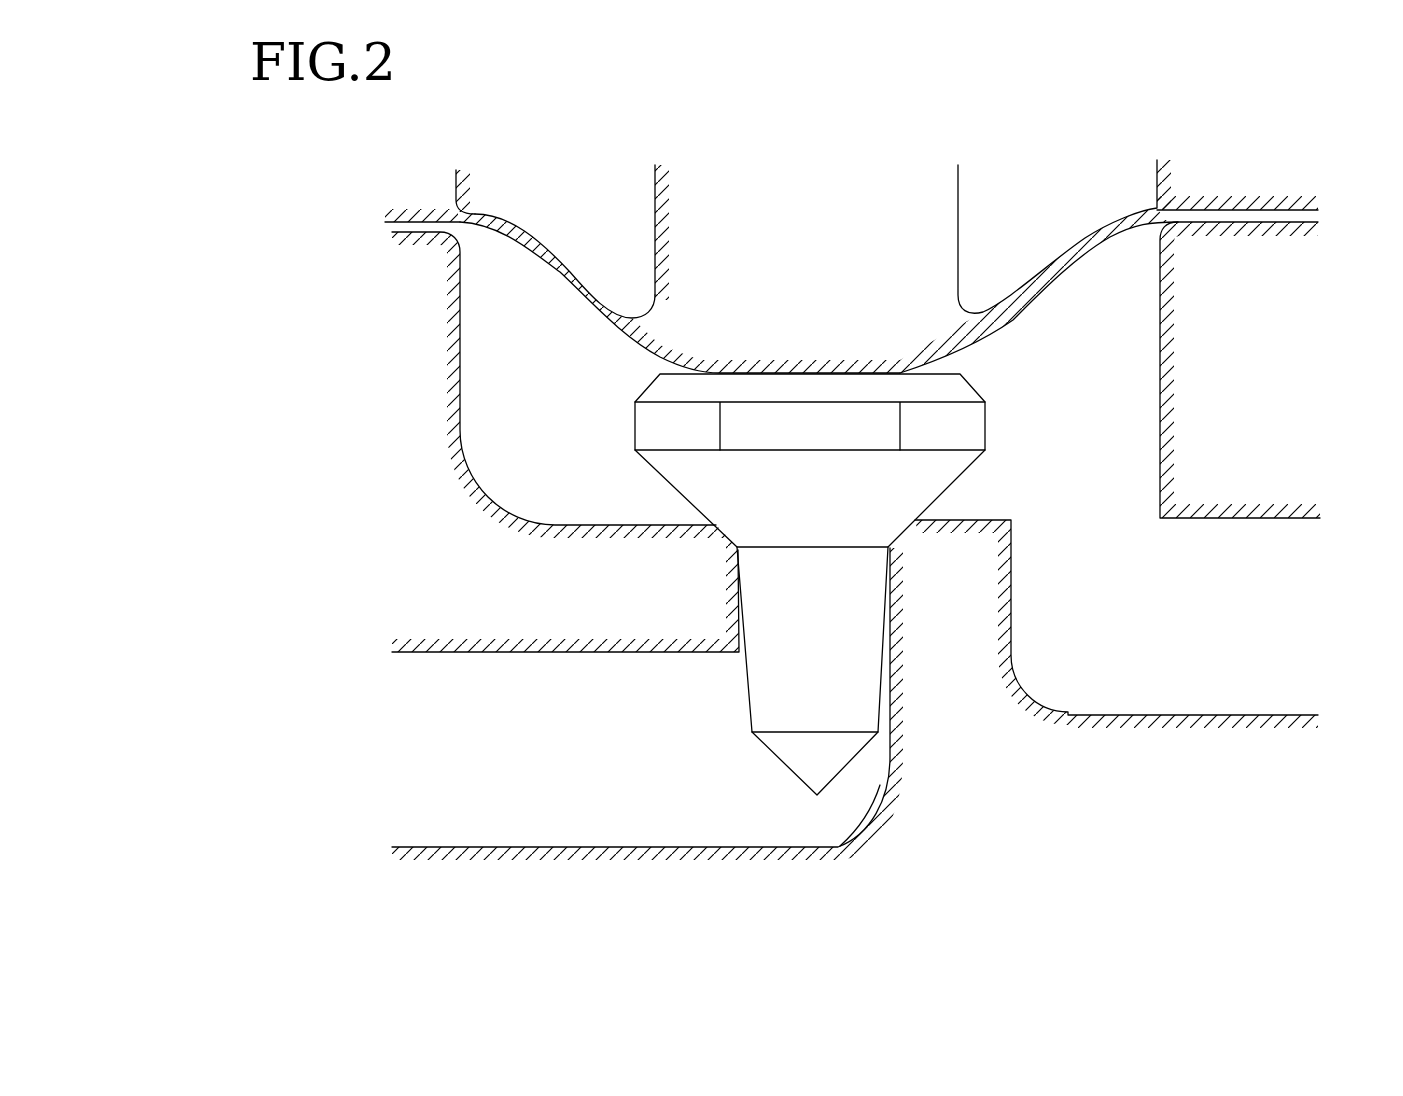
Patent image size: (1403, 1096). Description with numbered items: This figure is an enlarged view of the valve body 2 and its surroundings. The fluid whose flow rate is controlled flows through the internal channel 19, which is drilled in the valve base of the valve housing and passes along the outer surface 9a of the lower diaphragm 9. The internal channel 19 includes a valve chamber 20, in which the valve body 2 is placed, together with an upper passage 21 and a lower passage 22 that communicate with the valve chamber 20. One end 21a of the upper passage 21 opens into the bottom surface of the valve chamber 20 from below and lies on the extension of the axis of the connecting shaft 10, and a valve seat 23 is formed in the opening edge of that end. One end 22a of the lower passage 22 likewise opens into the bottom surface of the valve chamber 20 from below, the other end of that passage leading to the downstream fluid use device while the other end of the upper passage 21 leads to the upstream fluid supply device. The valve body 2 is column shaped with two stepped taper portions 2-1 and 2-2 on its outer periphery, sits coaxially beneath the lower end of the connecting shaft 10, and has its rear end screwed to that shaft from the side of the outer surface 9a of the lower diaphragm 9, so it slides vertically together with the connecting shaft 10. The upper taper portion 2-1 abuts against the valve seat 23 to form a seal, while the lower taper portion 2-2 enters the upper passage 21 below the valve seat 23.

The valve body 2 is at (868, 378).
The upper taper portion 2-1 is at (937, 498).
The lower taper portion 2-2 is at (883, 703).
The lower diaphragm 9 is at (566, 293).
The outer surface of the lower diaphragm 9a is at (1004, 332).
The connecting shaft 10 is at (690, 243).
The internal channel 19 is at (866, 836).
The valve chamber 20 is at (490, 285).
The upper passage 21 is at (676, 827).
The one end of the upper passage 21a is at (735, 552).
The lower passage 22 is at (1237, 703).
The one end of the lower passage 22a is at (1128, 522).
The valve seat 23 is at (727, 527).